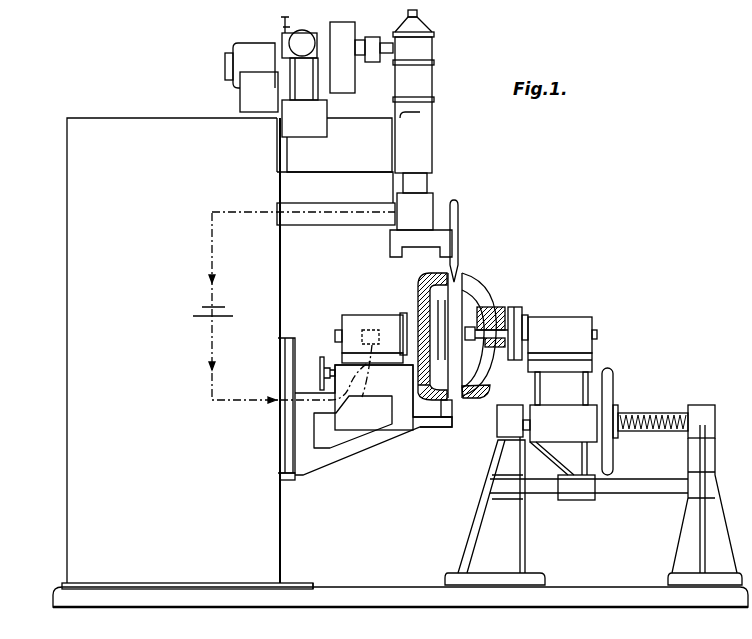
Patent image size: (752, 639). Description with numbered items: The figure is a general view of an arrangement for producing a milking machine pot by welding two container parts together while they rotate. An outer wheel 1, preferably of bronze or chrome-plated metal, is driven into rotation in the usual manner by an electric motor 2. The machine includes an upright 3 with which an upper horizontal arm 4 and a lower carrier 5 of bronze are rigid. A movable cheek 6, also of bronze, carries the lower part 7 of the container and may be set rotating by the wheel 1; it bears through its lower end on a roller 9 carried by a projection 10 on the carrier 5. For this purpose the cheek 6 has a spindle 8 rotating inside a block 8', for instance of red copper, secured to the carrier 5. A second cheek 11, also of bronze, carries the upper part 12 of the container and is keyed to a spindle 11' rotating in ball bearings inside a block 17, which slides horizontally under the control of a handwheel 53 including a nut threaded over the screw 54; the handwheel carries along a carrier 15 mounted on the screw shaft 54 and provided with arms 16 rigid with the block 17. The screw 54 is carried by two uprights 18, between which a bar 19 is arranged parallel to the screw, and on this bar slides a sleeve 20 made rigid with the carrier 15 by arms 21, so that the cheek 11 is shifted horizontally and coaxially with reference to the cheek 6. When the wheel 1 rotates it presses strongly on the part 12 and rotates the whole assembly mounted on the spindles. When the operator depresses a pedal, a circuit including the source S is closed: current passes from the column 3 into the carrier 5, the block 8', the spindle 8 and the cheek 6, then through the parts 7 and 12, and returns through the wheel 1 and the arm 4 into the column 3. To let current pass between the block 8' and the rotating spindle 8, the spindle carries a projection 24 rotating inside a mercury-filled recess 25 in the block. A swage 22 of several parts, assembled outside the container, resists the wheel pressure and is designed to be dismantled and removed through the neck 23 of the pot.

The outer wheel 1 is at (458, 225).
The electric motor 2 is at (247, 50).
The upright 3 is at (285, 540).
The upper horizontal arm 4 is at (338, 222).
The lower carrier 5 is at (352, 455).
The movable cheek 6 is at (425, 280).
The lower part of the container 7 is at (458, 300).
The spindle 8 is at (371, 327).
The block 8' is at (355, 360).
The roller 9 is at (455, 405).
The projection 10 is at (448, 428).
The second cheek 11 is at (541, 325).
The spindle 11' is at (570, 315).
The upper part of the container 12 is at (485, 365).
The carrier 15 is at (558, 447).
The arms 16 is at (582, 397).
The block 17 is at (575, 330).
The uprights 18 is at (698, 405).
The bar 19 is at (655, 495).
The sleeve 20 is at (579, 502).
The arms 21 is at (552, 455).
The swage 22 is at (480, 308).
The neck 23 is at (488, 282).
The projection 24 is at (368, 330).
The mercury-filled recess 25 is at (353, 422).
The handwheel 53 is at (614, 376).
The screw 54 is at (640, 413).
The source S is at (228, 312).